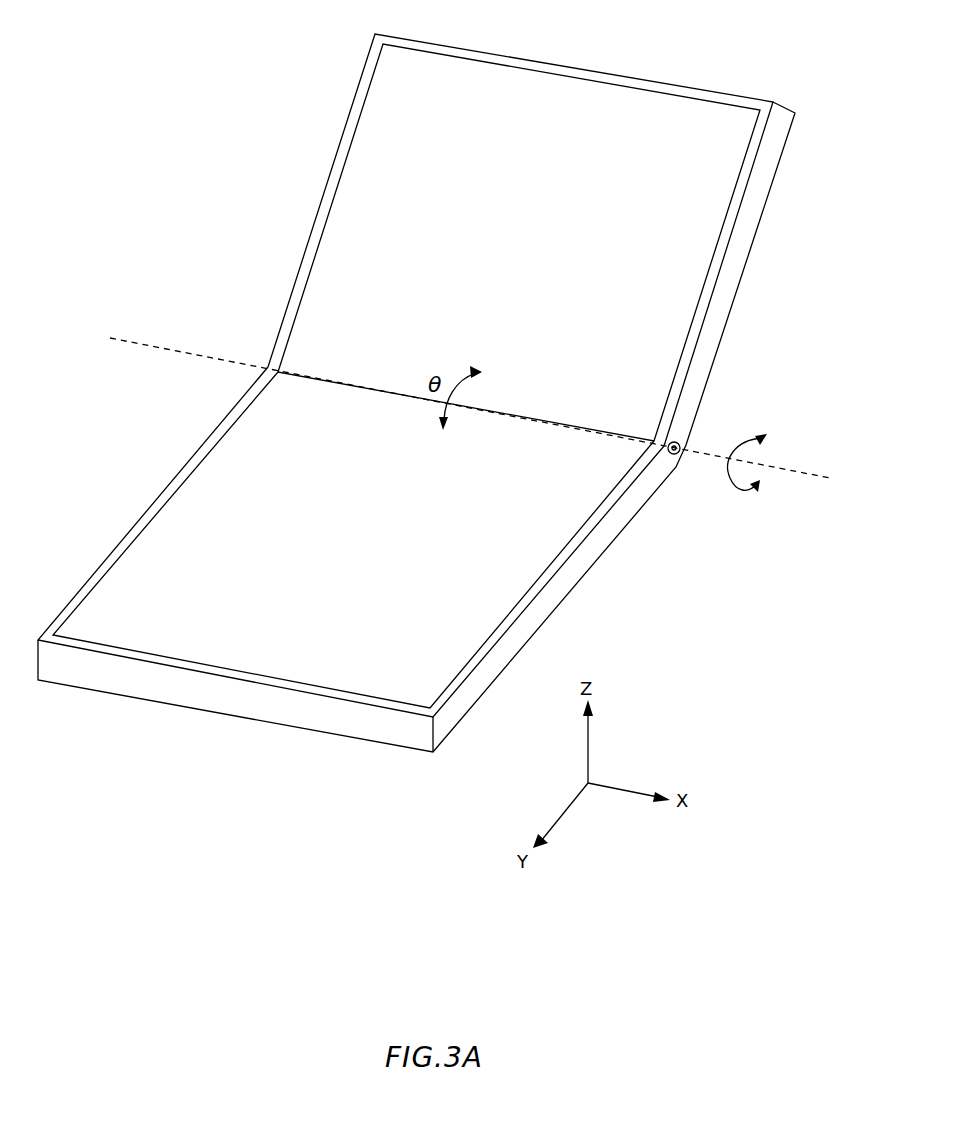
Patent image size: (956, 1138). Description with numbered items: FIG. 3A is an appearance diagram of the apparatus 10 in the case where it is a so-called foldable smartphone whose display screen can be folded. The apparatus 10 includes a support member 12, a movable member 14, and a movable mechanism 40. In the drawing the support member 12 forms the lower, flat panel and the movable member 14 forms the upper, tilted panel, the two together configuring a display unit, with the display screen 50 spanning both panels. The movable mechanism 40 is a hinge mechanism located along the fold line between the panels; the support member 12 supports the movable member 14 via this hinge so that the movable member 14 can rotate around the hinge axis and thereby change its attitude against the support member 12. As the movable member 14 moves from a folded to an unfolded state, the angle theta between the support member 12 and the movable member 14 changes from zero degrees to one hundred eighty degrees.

The apparatus 10 is at (465, 953).
The support member 12 is at (150, 503).
The movable member 14 is at (322, 195).
The movable mechanism 40 is at (684, 447).
The display 50 is at (530, 97).